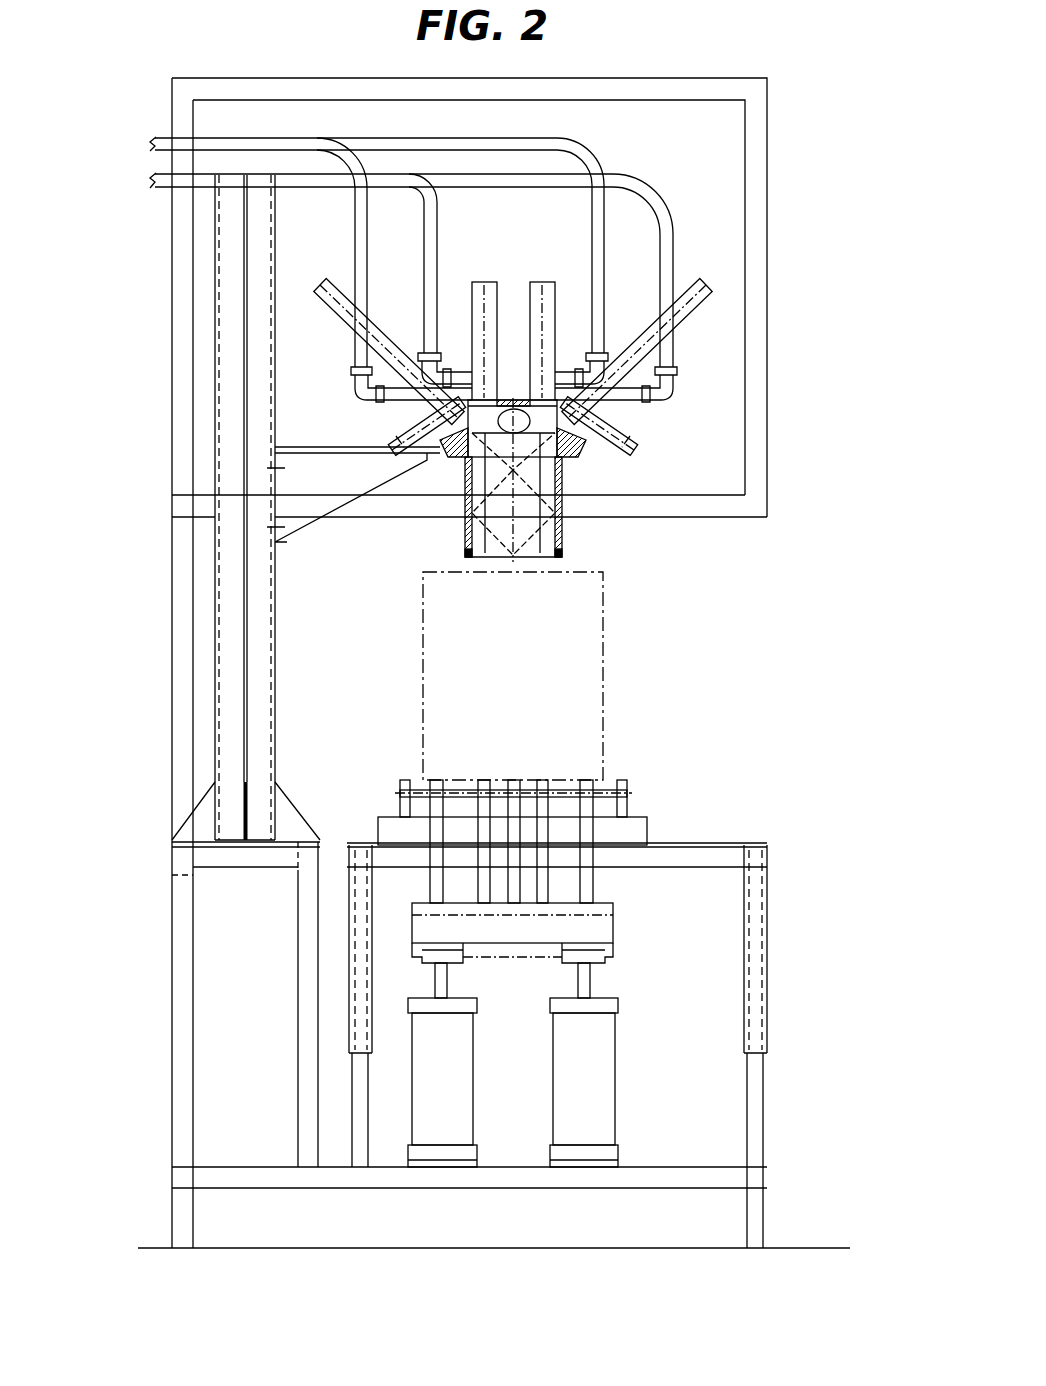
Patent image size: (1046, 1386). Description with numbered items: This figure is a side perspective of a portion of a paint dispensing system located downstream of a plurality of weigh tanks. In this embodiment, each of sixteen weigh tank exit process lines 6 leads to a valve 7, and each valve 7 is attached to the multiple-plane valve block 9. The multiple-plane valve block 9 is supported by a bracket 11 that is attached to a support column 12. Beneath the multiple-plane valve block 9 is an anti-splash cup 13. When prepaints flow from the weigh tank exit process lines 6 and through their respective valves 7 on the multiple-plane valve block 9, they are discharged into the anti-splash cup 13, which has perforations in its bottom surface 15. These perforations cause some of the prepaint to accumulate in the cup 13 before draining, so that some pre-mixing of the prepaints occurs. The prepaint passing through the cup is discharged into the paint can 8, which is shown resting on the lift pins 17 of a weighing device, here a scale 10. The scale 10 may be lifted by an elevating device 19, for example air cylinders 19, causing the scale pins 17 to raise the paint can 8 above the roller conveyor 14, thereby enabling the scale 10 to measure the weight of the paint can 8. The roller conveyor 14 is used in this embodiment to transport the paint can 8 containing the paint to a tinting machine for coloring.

The weigh tank exit process lines 6 is at (152, 177).
The valve 7 is at (537, 282).
The paint can 8 is at (618, 680).
The multiple-plane valve block 9 is at (585, 450).
The weighing device (scale) 10 is at (615, 925).
The bracket 11 is at (330, 462).
The support column 12 is at (213, 363).
The anti-splash cup 13 is at (563, 548).
The roller conveyor 14 is at (430, 795).
The bottom surface 15 is at (545, 558).
The lift pins 17 is at (627, 812).
The elevating device (air cylinders) 19 is at (618, 1060).